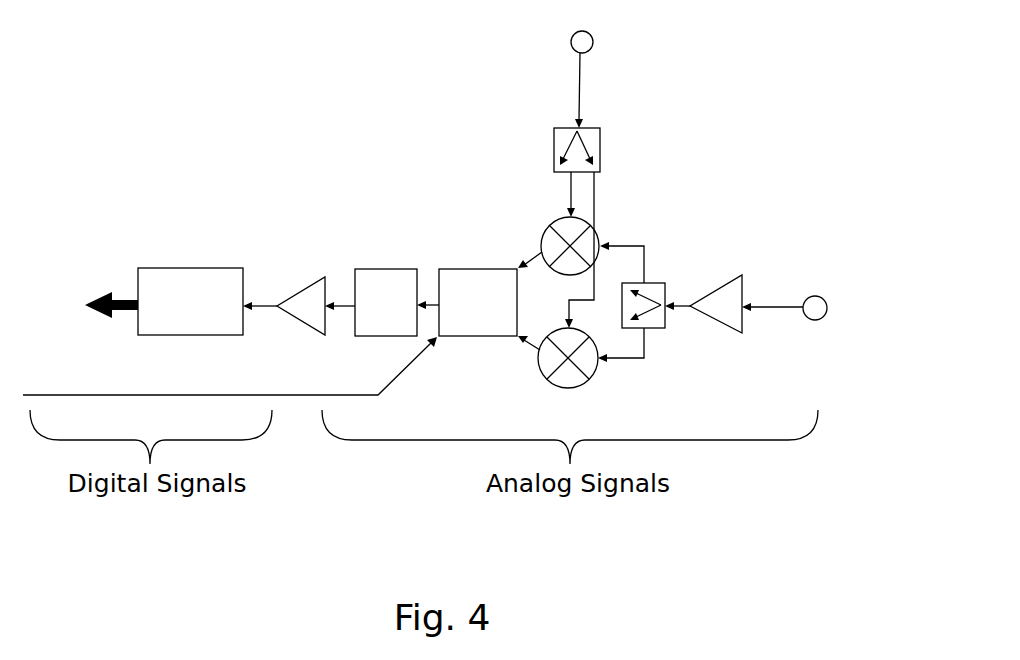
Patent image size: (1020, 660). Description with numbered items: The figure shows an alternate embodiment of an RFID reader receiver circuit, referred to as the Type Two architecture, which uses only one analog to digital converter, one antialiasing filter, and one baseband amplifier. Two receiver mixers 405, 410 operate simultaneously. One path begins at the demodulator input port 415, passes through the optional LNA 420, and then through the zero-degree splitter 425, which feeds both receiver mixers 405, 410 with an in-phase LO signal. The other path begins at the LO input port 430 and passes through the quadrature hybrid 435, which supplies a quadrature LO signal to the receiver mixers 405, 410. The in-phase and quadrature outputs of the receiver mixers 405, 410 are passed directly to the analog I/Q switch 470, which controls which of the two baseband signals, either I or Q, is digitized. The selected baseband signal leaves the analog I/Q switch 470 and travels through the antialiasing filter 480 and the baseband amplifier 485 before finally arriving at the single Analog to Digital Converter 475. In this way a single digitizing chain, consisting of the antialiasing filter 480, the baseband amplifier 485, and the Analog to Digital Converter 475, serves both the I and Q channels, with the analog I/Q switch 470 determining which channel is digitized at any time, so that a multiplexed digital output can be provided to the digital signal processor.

The receiver mixer 405 is at (565, 388).
The receiver mixer 410 is at (596, 233).
The demodulator input port 415 is at (818, 320).
The LNA 420 is at (718, 283).
The 0-degree splitter 425 is at (661, 330).
The LO input port 430 is at (572, 38).
The quadrature hybrid 435 is at (601, 150).
The analog I/Q switch 470 is at (470, 337).
The Analog to Digital Converter 475 is at (178, 268).
The antialiasing filter 480 is at (378, 270).
The baseband amplifier 485 is at (296, 290).